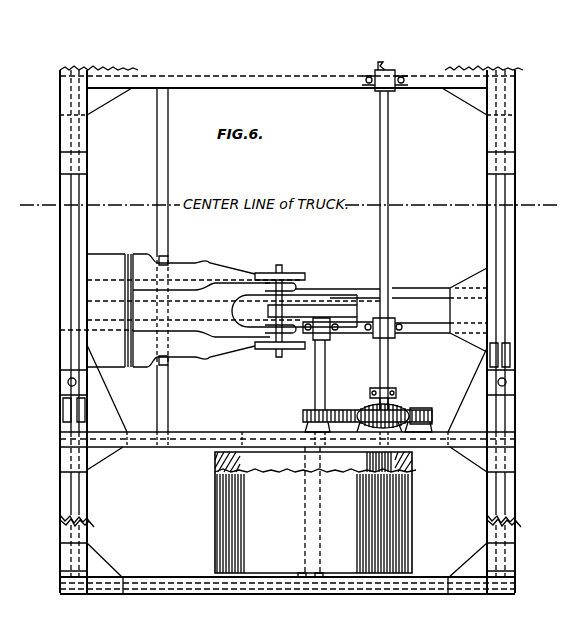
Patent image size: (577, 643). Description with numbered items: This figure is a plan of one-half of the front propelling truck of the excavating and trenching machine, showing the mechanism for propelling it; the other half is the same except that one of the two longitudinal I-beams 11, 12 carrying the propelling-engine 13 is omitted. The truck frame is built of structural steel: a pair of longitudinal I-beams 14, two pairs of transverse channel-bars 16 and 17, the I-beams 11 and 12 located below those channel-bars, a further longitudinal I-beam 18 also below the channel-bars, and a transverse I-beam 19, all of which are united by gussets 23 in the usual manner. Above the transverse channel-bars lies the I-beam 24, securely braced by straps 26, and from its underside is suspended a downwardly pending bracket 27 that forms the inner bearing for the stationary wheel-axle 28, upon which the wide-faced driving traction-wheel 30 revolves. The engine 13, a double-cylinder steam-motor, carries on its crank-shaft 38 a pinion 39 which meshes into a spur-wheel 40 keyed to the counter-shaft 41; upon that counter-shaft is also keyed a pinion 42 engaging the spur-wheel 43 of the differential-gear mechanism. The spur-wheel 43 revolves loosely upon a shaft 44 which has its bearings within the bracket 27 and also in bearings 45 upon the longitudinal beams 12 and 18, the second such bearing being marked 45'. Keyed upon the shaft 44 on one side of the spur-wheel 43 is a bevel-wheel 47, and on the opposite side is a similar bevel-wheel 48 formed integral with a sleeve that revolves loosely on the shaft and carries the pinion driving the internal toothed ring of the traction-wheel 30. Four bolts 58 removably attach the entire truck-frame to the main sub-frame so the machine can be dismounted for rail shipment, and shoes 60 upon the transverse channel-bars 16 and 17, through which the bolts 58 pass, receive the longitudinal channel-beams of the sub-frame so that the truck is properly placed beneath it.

The longitudinal I-beam 11 is at (413, 289).
The longitudinal I-beam 12 is at (424, 333).
The propelling-engine 13 is at (220, 310).
The longitudinal I-beam 14 is at (378, 594).
The transverse channel-bar 16 is at (515, 517).
The transverse channel-bar 17 is at (60, 502).
The longitudinal I-beam 18 is at (333, 88).
The transverse I-beam 19 is at (168, 177).
The gusset 23 is at (62, 580).
The I-beam 24 is at (242, 432).
The strap 26 is at (65, 552).
The bracket 27 is at (412, 452).
The wheel-axle 28 is at (304, 530).
The traction-wheel 30 is at (215, 517).
The crank-shaft 38 is at (278, 265).
The pinion 39 is at (266, 311).
The spur-wheel 40 is at (337, 300).
The counter-shaft 41 is at (315, 376).
The pinion 42 is at (303, 415).
The spur-wheel 43 is at (426, 406).
The shaft 44 is at (390, 192).
The bearing 45 is at (379, 92).
The bearing bracket 45' is at (352, 339).
The bevel-wheel 47 is at (364, 408).
The bevel-wheel 48 is at (360, 424).
The bolt 58 is at (60, 382).
The shoe 60 is at (62, 398).